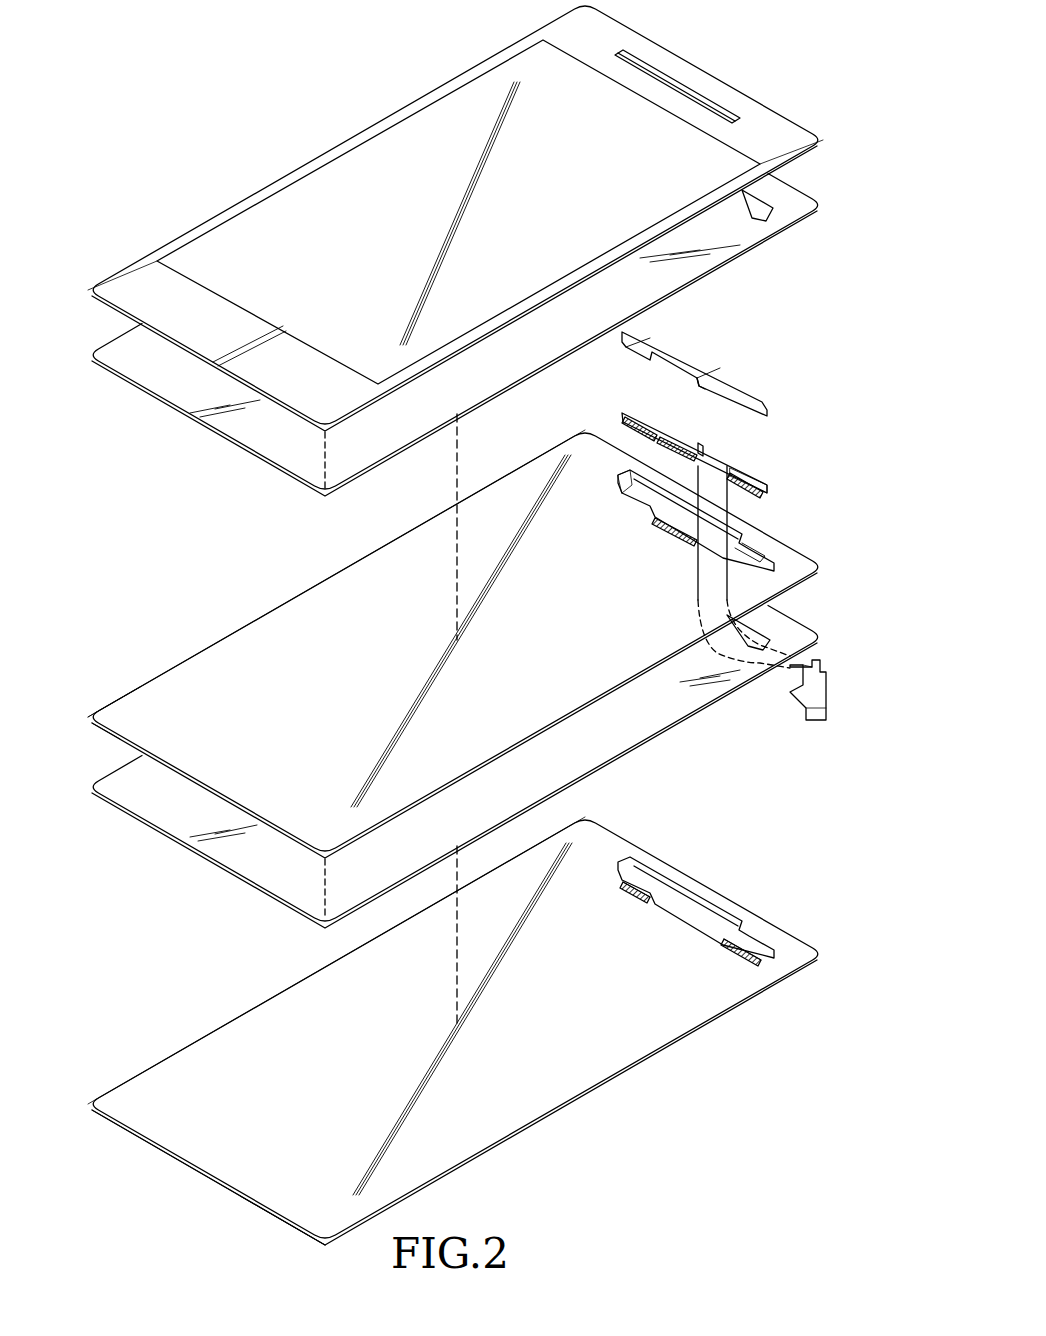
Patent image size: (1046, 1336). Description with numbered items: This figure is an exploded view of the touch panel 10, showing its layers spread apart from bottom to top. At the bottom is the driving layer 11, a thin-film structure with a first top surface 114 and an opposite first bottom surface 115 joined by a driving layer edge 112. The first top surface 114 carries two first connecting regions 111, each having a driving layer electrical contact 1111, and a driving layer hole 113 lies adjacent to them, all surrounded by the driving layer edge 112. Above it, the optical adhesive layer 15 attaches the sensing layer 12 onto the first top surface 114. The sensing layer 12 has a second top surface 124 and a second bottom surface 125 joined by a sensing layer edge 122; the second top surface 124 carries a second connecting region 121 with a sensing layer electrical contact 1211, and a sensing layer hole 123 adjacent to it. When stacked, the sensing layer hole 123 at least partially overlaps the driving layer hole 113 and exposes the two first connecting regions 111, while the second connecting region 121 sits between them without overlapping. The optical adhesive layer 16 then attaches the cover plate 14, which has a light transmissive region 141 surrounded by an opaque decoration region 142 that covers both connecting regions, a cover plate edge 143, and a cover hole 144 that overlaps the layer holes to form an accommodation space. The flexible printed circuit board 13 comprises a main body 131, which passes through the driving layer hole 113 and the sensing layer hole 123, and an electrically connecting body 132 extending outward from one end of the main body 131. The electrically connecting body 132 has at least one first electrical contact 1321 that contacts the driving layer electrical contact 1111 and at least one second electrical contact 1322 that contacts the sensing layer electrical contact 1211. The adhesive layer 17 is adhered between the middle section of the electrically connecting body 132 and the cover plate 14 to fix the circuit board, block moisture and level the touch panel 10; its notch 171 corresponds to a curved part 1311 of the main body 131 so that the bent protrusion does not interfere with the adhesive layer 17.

The touch panel 10 is at (76, 25).
The driving layer 11 is at (472, 1035).
The first connecting region 111 is at (630, 903).
The driving layer electrical contact 1111 is at (648, 890).
The driving layer edge 112 is at (188, 1042).
The driving layer hole 113 is at (697, 912).
The first top surface 114 is at (232, 1173).
The first bottom surface 115 is at (260, 1207).
The sensing layer 12 is at (463, 639).
The second connecting region 121 is at (672, 537).
The sensing layer electrical contact 1211 is at (618, 495).
The sensing layer edge 122 is at (165, 672).
The sensing layer hole 123 is at (745, 558).
The second top surface 124 is at (140, 707).
The second bottom surface 125 is at (102, 732).
The flexible printed circuit board 13 is at (715, 553).
The main body 131 is at (805, 660).
The electrically connecting body 132 is at (760, 462).
The curved part 1311 is at (717, 448).
The first electrical contact 1321 is at (625, 412).
The second electrical contact 1322 is at (695, 440).
The cover plate 14 is at (463, 218).
The light transmissive region 141 is at (357, 168).
The decoration region 142 is at (790, 122).
The cover plate edge 143 is at (155, 248).
The cover hole 144 is at (717, 100).
The optical adhesive layer 15 is at (263, 877).
The optical adhesive layer 16 is at (267, 452).
The adhesive layer 17 is at (718, 374).
The notch 171 is at (720, 378).